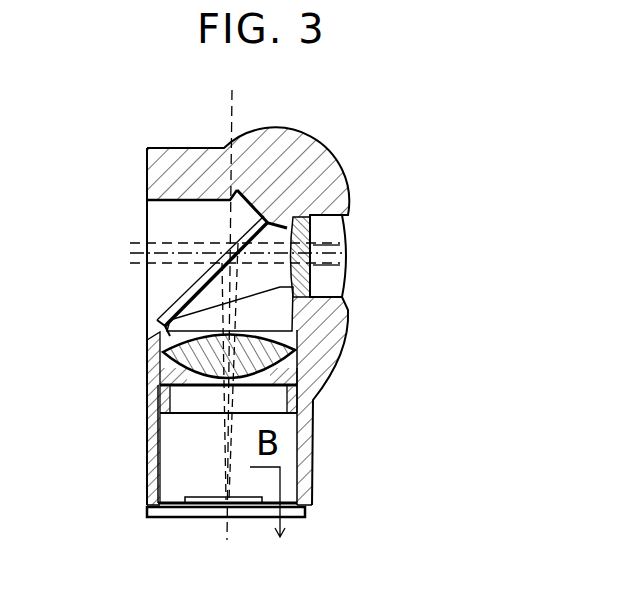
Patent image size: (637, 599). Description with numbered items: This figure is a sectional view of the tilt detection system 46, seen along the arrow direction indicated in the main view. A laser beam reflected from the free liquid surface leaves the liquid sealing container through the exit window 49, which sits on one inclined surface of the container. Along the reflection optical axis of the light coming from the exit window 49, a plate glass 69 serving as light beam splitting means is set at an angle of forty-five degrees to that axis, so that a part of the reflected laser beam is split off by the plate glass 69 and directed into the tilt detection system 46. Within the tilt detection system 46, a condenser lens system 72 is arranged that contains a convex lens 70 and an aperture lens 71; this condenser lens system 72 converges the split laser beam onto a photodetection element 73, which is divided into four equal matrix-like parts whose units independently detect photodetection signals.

The tilt detection system 46 is at (382, 350).
The exit window 49 is at (340, 272).
The plate glass 69 is at (177, 298).
The condenser lens system 72 is at (136, 377).
The convex lens 70 is at (257, 387).
The aperture lens 71 is at (145, 440).
The photodetection element 73 is at (210, 498).